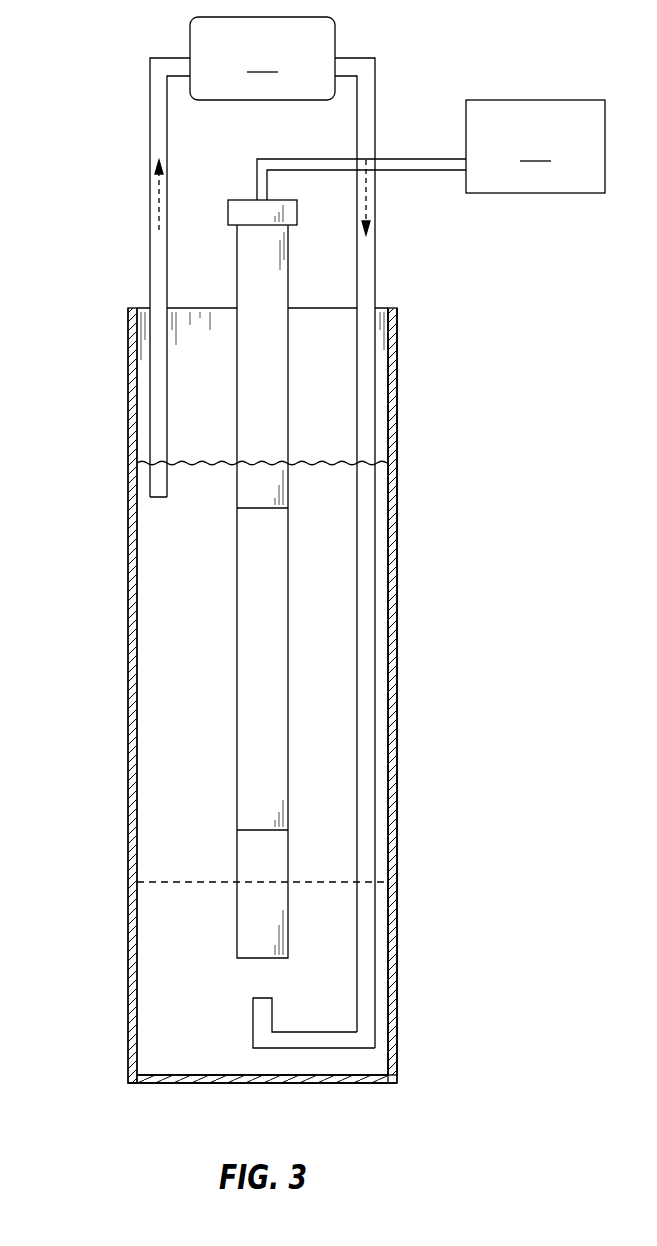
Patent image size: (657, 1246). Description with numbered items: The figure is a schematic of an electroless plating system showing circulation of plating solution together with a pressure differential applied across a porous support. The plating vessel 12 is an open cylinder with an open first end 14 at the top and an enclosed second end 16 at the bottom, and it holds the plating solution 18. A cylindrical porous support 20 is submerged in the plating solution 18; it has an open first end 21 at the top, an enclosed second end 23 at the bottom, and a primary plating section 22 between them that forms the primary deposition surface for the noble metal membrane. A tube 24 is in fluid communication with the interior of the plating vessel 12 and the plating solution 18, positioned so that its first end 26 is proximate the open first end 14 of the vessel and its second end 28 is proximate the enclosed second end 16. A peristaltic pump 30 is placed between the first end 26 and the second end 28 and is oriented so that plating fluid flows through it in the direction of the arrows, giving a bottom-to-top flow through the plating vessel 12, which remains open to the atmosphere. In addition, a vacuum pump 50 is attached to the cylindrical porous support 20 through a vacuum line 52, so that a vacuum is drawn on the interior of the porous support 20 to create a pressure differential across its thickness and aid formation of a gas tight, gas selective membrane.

The plating vessel 12 is at (109, 652).
The open first end 14 is at (397, 380).
The enclosed second end 16 is at (403, 988).
The plating solution 18 is at (184, 580).
The cylindrical porous support 20 is at (284, 579).
The open first end 21 is at (268, 286).
The primary plating section 22 is at (266, 670).
The enclosed second end 23 is at (270, 862).
The tube 24 is at (376, 127).
The first end 26 is at (158, 479).
The second end 28 is at (263, 1010).
The peristaltic pump 30 is at (262, 58).
The vacuum pump 50 is at (535, 146).
The vacuum line 52 is at (410, 172).